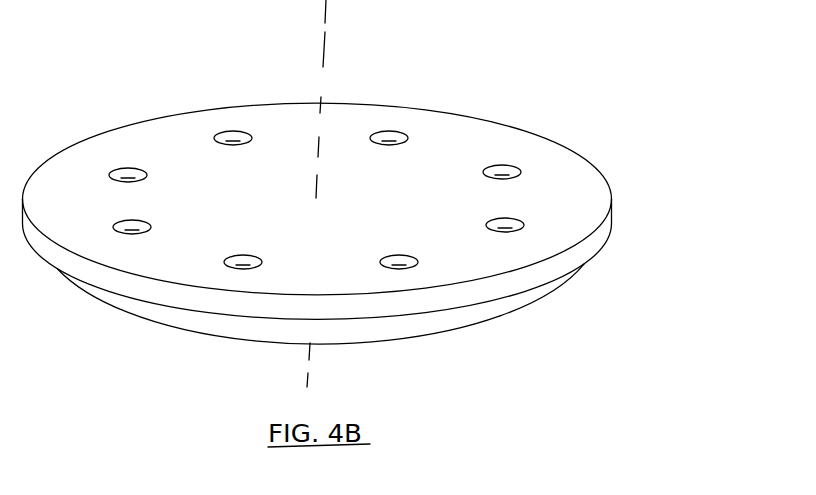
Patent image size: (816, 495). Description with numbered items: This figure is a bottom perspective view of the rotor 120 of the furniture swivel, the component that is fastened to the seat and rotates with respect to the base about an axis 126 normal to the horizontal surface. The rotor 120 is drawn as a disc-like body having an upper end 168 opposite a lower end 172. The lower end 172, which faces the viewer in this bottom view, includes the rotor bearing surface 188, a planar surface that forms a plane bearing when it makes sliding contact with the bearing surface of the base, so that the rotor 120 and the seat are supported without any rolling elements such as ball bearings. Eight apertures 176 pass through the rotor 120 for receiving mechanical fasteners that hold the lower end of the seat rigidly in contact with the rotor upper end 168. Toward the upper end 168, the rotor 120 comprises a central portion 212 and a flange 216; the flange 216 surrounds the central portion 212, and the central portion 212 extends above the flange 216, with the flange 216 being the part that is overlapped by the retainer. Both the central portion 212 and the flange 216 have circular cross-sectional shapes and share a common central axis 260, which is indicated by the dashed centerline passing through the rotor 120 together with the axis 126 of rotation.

The rotor 120 is at (642, 42).
The axis 126 is at (376, 193).
The common central axis 260 is at (326, 52).
The lower end 172 is at (594, 208).
The rotor bearing surface 188 is at (405, 205).
The apertures 176 is at (130, 170).
The upper end 168 is at (534, 303).
The flange 216 is at (587, 262).
The central portion 212 is at (449, 331).